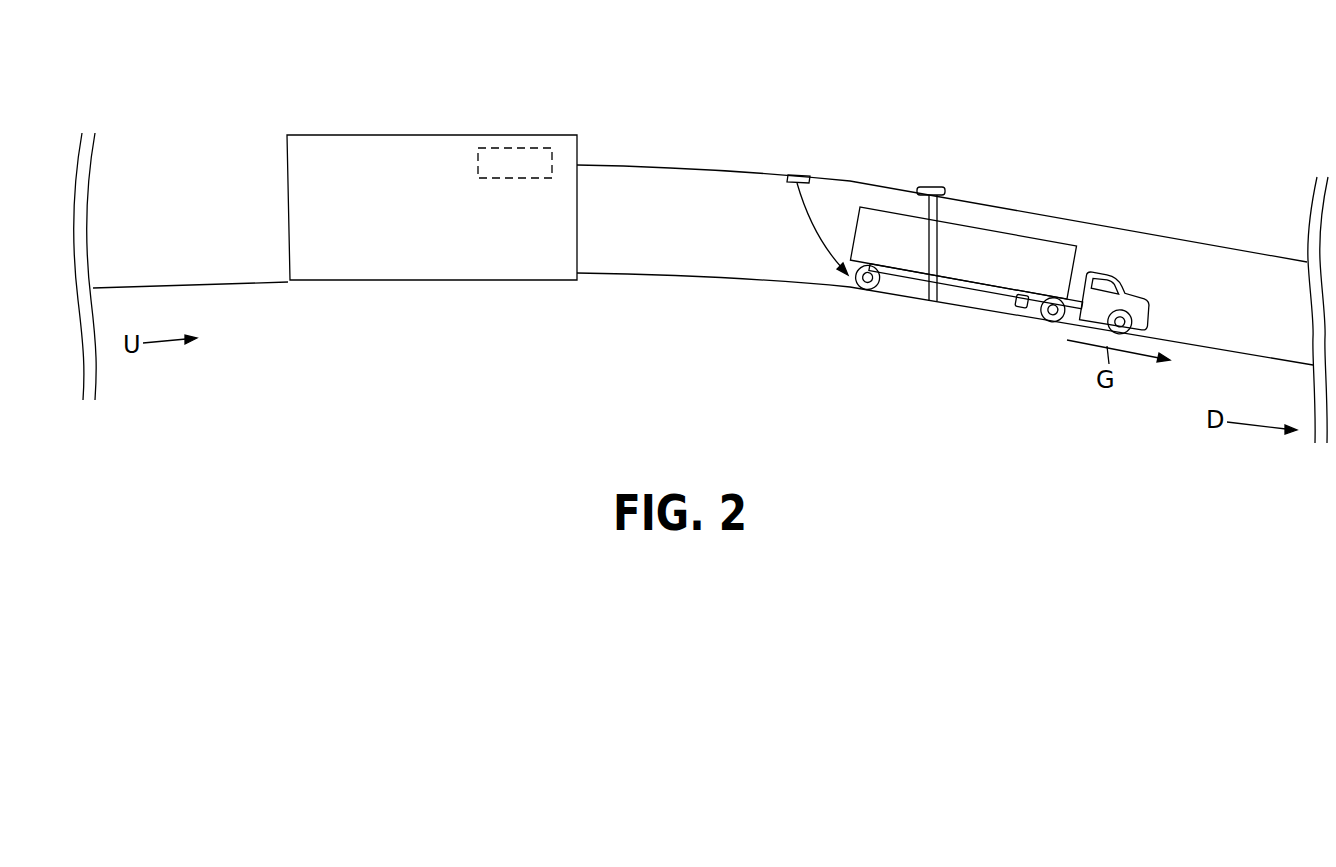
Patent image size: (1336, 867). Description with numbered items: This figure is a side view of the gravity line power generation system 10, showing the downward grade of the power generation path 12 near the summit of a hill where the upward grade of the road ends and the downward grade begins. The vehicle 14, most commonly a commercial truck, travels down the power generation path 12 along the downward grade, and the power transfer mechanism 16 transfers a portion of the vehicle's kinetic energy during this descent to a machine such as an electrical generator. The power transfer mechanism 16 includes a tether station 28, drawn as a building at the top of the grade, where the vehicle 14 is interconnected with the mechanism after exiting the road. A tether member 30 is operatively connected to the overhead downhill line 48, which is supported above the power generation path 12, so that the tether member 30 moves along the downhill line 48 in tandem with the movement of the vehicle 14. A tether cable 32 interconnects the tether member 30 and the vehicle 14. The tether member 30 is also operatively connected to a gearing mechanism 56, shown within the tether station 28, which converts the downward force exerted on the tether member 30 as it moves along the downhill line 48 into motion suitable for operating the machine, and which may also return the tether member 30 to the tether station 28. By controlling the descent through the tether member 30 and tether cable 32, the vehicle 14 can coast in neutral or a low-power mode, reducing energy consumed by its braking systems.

The gravity line power generation system 10 is at (1032, 128).
The power generation path 12 is at (755, 278).
The vehicle 14 is at (1047, 257).
The power transfer mechanism 16 is at (801, 300).
The tether station 28 is at (450, 133).
The tether member 30 is at (788, 178).
The tether cable 32 is at (815, 208).
The downhill line 48 is at (635, 163).
The gearing mechanism 56 is at (533, 165).